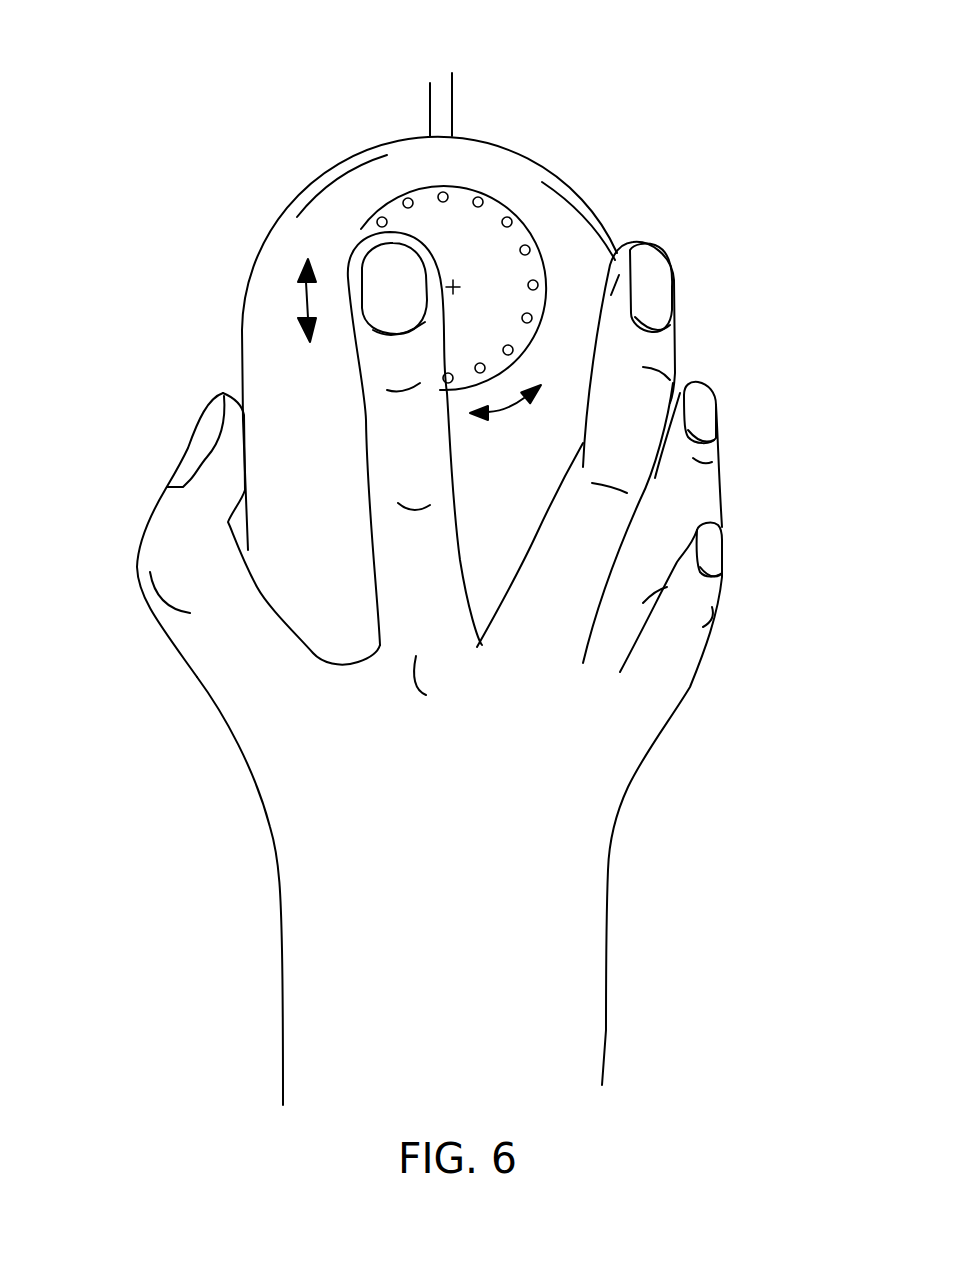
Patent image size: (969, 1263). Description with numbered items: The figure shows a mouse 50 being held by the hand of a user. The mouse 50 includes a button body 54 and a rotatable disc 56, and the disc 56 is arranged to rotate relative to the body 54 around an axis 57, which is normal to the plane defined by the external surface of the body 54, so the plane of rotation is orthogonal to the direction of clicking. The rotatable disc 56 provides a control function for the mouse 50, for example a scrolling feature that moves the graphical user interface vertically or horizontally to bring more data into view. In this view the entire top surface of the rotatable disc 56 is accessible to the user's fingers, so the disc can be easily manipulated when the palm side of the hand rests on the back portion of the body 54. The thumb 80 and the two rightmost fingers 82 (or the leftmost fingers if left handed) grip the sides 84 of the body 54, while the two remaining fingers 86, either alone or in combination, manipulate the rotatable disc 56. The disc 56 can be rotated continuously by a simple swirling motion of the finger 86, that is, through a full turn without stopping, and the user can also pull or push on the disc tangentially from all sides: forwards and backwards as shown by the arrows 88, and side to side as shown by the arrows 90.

The mouse 50 is at (238, 264).
The button body 54 is at (532, 166).
The rotatable disc 56 is at (397, 213).
The axis 57 is at (455, 283).
The thumb 80 is at (158, 527).
The two rightmost fingers 82 is at (727, 565).
The sides of the body 84 is at (602, 208).
The remaining fingers 86 is at (367, 250).
The arrows 88 is at (302, 300).
The arrows 90 is at (505, 413).